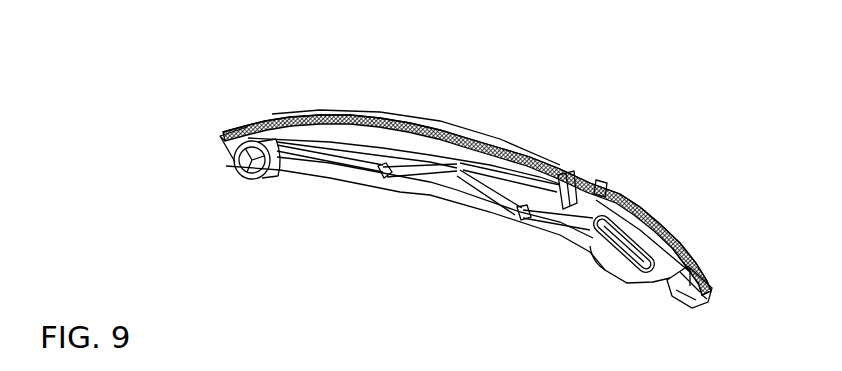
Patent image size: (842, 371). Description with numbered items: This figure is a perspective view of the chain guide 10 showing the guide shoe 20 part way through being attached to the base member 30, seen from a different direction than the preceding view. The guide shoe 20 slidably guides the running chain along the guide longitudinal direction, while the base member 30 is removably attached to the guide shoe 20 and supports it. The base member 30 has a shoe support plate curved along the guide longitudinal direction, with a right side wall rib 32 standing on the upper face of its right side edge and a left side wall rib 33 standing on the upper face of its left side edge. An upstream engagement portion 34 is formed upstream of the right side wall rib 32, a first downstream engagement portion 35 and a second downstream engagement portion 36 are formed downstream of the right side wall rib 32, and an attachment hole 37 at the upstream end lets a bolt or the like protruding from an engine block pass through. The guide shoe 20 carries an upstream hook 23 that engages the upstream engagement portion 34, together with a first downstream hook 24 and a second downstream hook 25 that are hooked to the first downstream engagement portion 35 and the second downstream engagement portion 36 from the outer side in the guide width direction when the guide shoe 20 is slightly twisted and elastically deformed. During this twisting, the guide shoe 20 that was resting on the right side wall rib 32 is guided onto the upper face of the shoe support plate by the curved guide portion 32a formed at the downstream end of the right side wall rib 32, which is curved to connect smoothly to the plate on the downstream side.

The chain guide 10 is at (141, 77).
The guide shoe 20 is at (533, 150).
The upstream hook 23 is at (238, 120).
The upstream engagement portion 34 is at (467, 203).
The first downstream hook 24 is at (706, 291).
The second downstream hook 25 is at (578, 172).
The base member 30 is at (540, 215).
The right side wall rib 32 is at (385, 136).
The curved guide portion 32a is at (465, 172).
The left side wall rib 33 is at (403, 117).
The first downstream engagement portion 35 is at (692, 262).
The second downstream engagement portion 36 is at (606, 181).
The attachment hole 37 is at (240, 168).